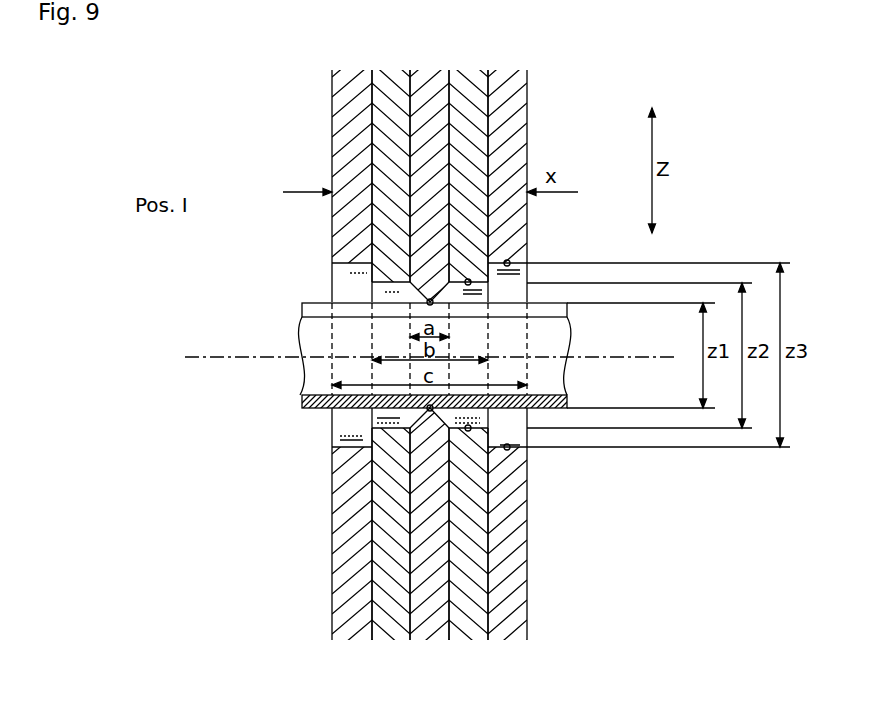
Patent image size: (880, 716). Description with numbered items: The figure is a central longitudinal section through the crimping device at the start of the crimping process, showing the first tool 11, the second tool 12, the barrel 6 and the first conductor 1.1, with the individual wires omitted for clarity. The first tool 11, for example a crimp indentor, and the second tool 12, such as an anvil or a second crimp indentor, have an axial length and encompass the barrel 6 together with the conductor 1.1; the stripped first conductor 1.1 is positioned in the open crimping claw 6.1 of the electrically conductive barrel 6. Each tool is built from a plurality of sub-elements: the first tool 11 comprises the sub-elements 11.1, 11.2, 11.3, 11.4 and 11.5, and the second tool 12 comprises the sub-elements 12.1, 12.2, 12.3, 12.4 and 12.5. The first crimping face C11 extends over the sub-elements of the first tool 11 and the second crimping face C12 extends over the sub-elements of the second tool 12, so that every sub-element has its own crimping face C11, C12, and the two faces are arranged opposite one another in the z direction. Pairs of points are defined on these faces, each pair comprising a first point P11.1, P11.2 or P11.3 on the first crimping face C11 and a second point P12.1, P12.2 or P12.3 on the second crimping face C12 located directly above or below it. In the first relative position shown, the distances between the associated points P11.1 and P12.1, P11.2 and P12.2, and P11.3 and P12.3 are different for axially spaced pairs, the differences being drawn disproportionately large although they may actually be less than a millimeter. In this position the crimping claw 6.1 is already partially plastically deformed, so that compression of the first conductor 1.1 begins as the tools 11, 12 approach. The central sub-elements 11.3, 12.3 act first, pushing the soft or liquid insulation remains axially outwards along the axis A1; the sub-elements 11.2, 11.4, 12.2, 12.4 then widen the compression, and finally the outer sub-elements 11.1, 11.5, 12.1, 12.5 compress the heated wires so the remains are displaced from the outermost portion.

The first tool 11 is at (312, 142).
The sub-element of the first tool 11.1 is at (332, 97).
The sub-element of the first tool 11.2 is at (386, 82).
The central sub-element of the first tool 11.3 is at (430, 84).
The sub-element of the first tool 11.4 is at (470, 82).
The sub-element of the first tool 11.5 is at (527, 97).
The first point P11.1 is at (430, 300).
The first point P11.2 is at (468, 282).
The first point P11.3 is at (507, 263).
The first crimping face C11 is at (338, 272).
The crimping claw 6.1 is at (302, 310).
The first conductor 1.1 is at (567, 345).
The barrel 6 is at (567, 400).
The axis A1 is at (200, 357).
The second tool 12 is at (314, 528).
The sub-element of the second tool 12.1 is at (332, 613).
The sub-element of the second tool 12.2 is at (390, 635).
The central sub-element of the second tool 12.3 is at (424, 633).
The sub-element of the second tool 12.4 is at (470, 637).
The sub-element of the second tool 12.5 is at (527, 613).
The second point P12.1 is at (430, 410).
The second point P12.2 is at (468, 428).
The second point P12.3 is at (507, 449).
The second crimping face C12 is at (342, 420).